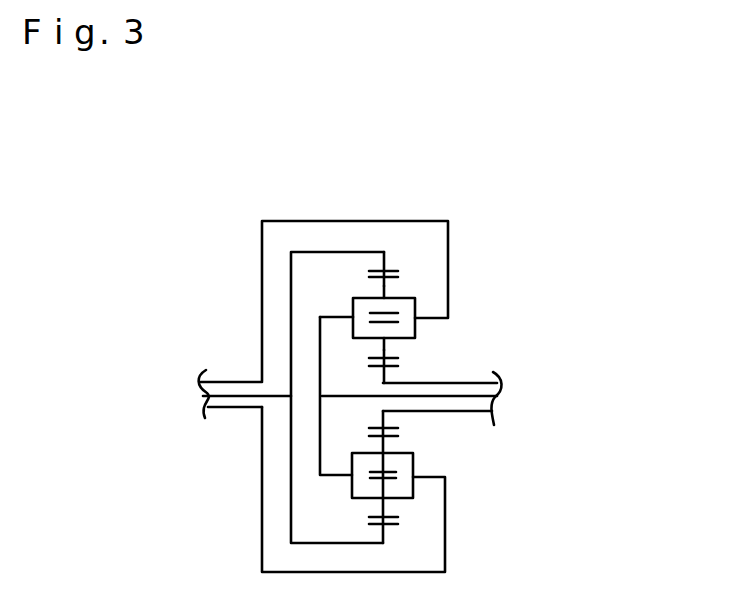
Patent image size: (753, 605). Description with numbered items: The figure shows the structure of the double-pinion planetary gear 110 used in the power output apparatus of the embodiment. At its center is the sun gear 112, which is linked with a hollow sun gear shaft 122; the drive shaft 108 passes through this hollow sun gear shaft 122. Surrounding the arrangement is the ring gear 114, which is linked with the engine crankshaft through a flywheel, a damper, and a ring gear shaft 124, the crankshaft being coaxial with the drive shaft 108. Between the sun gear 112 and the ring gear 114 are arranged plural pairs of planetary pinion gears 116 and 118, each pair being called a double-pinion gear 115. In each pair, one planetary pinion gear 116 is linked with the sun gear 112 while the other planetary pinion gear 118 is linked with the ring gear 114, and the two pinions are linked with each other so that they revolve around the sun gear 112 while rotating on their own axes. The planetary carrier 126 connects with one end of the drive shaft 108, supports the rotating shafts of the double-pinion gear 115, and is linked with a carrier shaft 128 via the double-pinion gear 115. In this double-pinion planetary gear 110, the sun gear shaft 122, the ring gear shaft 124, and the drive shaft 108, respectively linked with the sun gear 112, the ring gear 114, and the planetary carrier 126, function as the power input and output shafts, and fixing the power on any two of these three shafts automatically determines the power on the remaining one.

The drive shaft 108 is at (497, 372).
The double-pinion planetary gear 110 is at (466, 181).
The sun gear 112 is at (387, 375).
The ring gear 114 is at (386, 261).
The double-pinion gear 115 is at (610, 228).
The planetary pinion gear 116 is at (385, 348).
The planetary pinion gear 118 is at (387, 286).
The sun gear shaft 122 is at (480, 413).
The ring gear shaft 124 is at (234, 381).
The planetary carrier 126 is at (320, 330).
The carrier shaft 128 is at (220, 408).